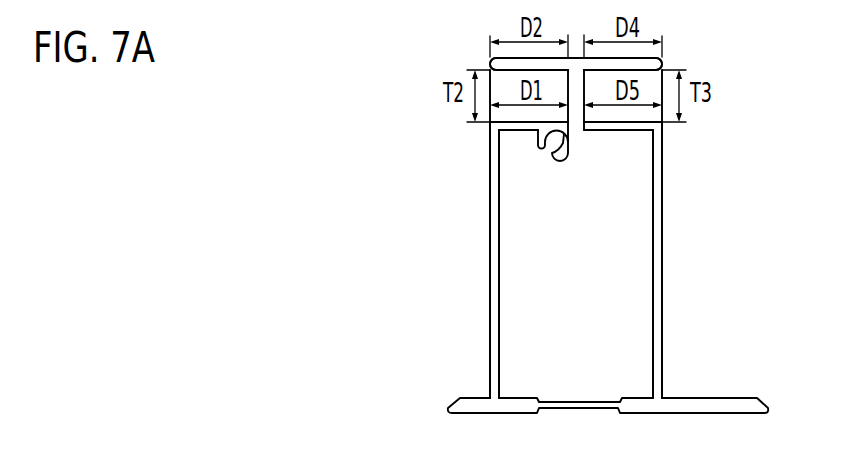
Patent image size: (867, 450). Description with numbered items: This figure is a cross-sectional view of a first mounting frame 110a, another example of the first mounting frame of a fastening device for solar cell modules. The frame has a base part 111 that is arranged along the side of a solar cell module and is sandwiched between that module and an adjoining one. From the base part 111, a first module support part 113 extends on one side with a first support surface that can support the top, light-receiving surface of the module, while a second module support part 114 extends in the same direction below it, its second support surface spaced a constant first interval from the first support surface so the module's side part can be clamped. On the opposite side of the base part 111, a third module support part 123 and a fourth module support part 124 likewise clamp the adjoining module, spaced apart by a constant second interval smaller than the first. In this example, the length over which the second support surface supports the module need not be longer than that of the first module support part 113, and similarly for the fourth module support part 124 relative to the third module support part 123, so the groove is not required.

The first mounting frame 110a is at (310, 111).
The base part 111 is at (490, 272).
The first module support part 113 is at (491, 60).
The second module support part 114 is at (490, 121).
The third module support part 123 is at (662, 60).
The fourth module support part 124 is at (664, 120).